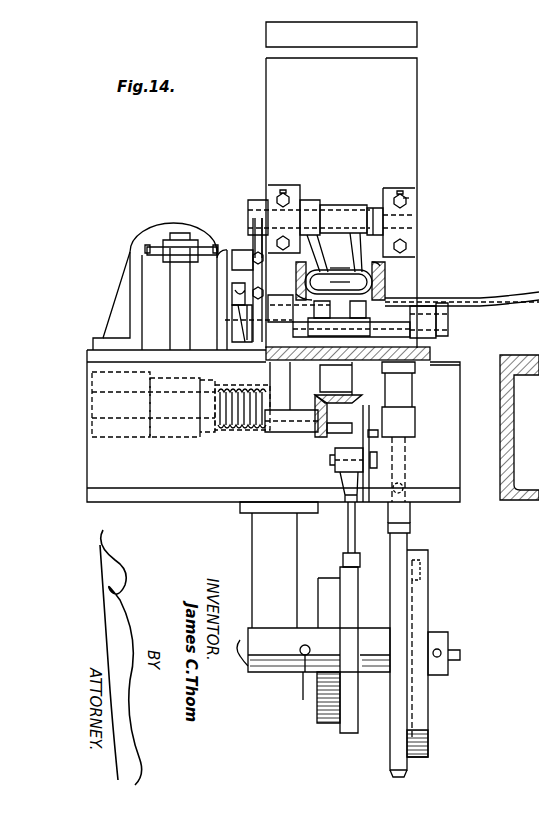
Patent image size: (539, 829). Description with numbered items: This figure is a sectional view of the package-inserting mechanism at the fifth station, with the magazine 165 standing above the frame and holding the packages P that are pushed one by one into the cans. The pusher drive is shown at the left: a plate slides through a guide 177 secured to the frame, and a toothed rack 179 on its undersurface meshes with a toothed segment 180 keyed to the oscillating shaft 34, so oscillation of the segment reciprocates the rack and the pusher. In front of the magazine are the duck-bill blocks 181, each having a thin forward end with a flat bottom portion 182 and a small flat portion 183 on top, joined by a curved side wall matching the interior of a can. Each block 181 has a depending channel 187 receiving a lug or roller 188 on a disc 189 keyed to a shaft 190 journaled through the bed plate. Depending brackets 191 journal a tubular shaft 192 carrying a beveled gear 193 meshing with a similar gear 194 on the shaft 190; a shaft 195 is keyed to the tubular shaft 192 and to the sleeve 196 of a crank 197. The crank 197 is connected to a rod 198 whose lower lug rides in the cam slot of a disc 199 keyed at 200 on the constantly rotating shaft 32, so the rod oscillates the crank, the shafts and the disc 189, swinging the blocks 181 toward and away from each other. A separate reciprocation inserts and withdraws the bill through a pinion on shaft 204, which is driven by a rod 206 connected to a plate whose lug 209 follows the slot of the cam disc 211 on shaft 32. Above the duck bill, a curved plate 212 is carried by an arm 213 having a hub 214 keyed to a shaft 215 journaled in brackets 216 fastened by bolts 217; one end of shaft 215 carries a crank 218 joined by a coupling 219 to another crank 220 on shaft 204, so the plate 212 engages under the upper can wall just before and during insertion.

The magazine 165 is at (438, 112).
The brackets 216 is at (274, 209).
The shaft 215 is at (222, 192).
The hub 214 is at (326, 208).
The bolts 217 is at (404, 199).
The small flat portion 183 is at (307, 186).
The flat bottom portion 182 is at (352, 214).
The arm 213 is at (337, 253).
The blocks 181 is at (305, 282).
The packages P is at (355, 284).
The curved plate 212 is at (383, 266).
The lug or roller 188 is at (297, 301).
The depending channel 187 is at (330, 328).
The disc 189 is at (408, 302).
The shaft 204 is at (448, 326).
The guide 177 is at (143, 246).
The toothed segment 180 is at (178, 286).
The toothed rack 179 is at (185, 243).
The crank 218 is at (246, 236).
The coupling 219 is at (236, 282).
The crank 220 is at (246, 312).
The oscillating shaft 34 is at (150, 440).
The depending brackets 191 is at (268, 378).
The tubular shaft 192 is at (300, 436).
The beveled gear 194 is at (320, 398).
The beveled gear 193 is at (320, 434).
The shaft 190 is at (348, 372).
The shaft 195 is at (341, 436).
The sleeve 196 is at (378, 437).
The rod 206 is at (410, 545).
The lug 209 is at (418, 575).
The cam disc 211 is at (430, 703).
The constantly rotating shaft 32 is at (448, 640).
The crank 197 is at (372, 505).
The rod 198 is at (347, 540).
The key 200 is at (305, 665).
The disc 199 is at (320, 704).